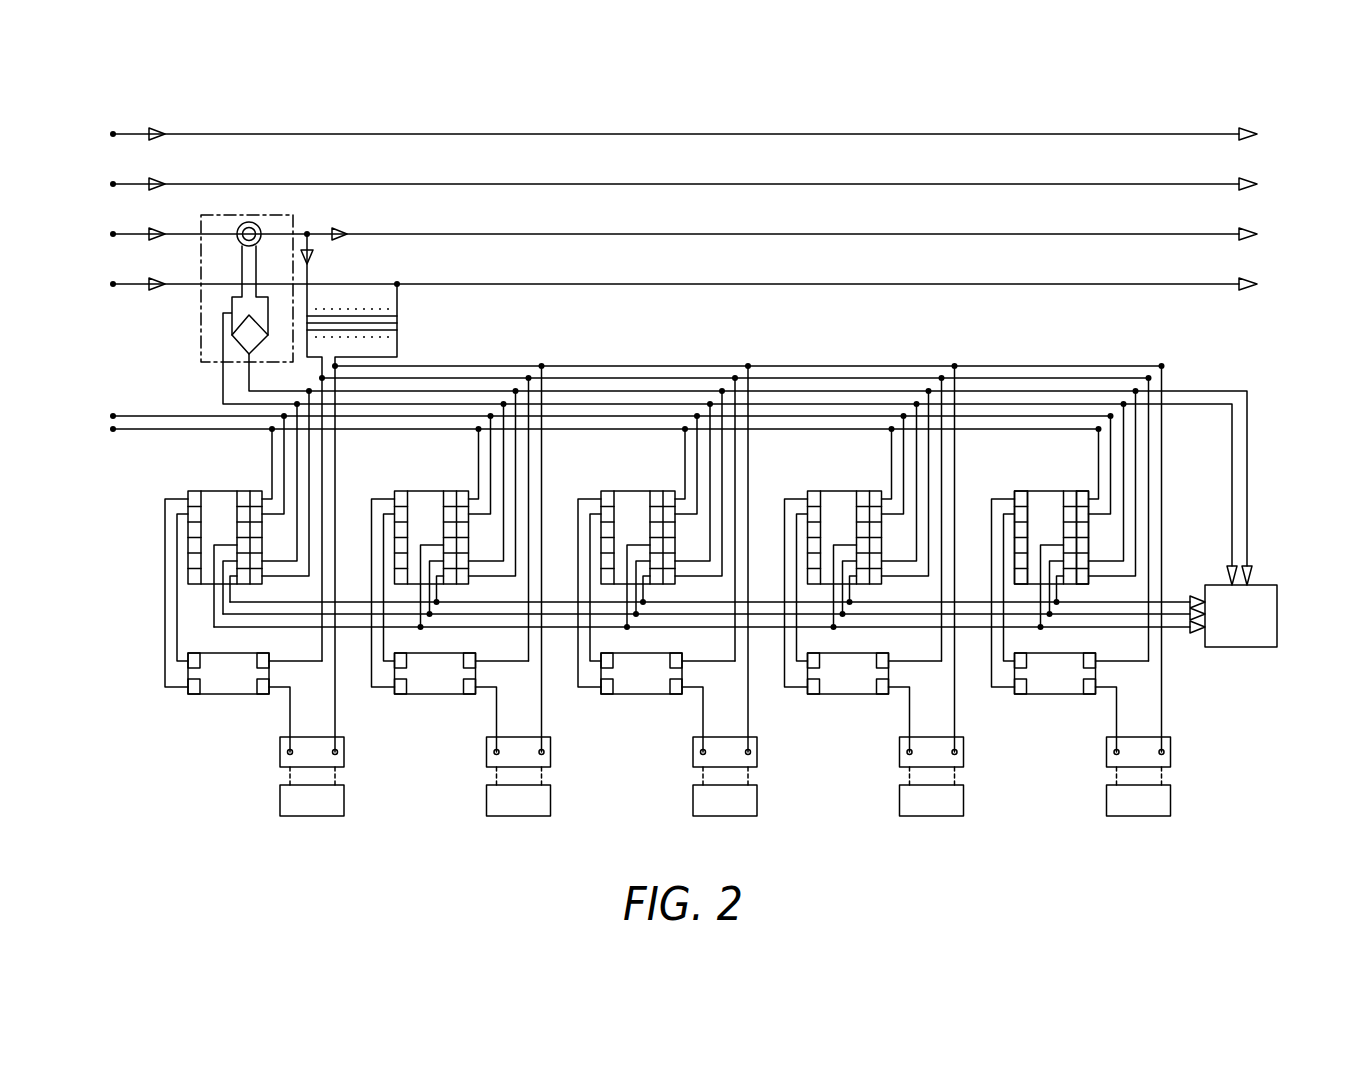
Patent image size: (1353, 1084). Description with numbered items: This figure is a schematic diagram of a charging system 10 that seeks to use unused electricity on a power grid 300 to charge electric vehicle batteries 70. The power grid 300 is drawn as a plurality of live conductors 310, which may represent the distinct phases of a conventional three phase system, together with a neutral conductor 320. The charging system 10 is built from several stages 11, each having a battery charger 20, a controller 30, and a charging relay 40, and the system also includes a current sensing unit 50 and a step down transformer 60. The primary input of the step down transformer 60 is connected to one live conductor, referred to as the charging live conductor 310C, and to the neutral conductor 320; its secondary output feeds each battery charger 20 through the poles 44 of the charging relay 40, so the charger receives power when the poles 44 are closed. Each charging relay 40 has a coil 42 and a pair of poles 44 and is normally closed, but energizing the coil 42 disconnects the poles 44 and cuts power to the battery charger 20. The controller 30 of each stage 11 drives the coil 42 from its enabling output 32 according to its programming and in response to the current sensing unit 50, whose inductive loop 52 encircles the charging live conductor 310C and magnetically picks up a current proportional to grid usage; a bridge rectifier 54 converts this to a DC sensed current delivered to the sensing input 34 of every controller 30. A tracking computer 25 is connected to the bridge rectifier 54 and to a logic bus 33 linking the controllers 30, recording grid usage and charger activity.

The charging system 10 is at (143, 768).
The stage 11 is at (363, 845).
The battery charger 20 is at (552, 755).
The tracking computer 25 is at (1278, 615).
The controller 30 is at (222, 491).
The enabling output 32 is at (1009, 522).
The logic bus 33 is at (1170, 598).
The sensing input 34 is at (1137, 537).
The charging relay 40 is at (230, 697).
The coil 42 is at (1044, 696).
The poles 44 is at (1116, 673).
The current sensing unit 50 is at (201, 313).
The inductive loop 52 is at (243, 222).
The bridge rectifier 54 is at (237, 343).
The step down transformer 60 is at (372, 331).
The electric vehicle battery 70 is at (552, 800).
The power grid 300 is at (1263, 134).
The live conductors 310 is at (556, 234).
The charging live conductor 310C is at (440, 234).
The neutral conductor 320 is at (657, 284).